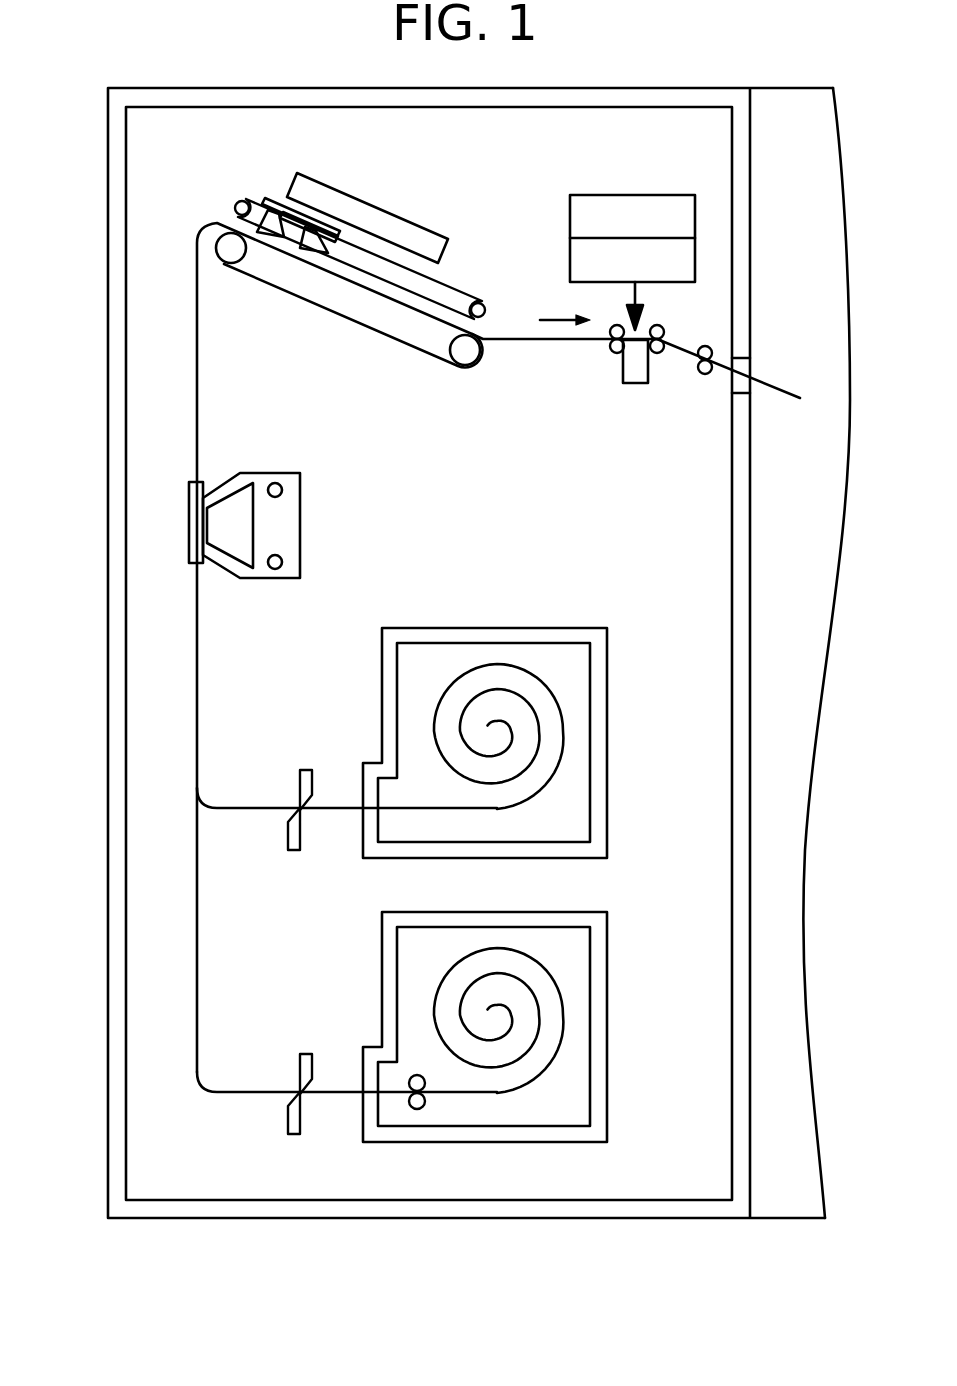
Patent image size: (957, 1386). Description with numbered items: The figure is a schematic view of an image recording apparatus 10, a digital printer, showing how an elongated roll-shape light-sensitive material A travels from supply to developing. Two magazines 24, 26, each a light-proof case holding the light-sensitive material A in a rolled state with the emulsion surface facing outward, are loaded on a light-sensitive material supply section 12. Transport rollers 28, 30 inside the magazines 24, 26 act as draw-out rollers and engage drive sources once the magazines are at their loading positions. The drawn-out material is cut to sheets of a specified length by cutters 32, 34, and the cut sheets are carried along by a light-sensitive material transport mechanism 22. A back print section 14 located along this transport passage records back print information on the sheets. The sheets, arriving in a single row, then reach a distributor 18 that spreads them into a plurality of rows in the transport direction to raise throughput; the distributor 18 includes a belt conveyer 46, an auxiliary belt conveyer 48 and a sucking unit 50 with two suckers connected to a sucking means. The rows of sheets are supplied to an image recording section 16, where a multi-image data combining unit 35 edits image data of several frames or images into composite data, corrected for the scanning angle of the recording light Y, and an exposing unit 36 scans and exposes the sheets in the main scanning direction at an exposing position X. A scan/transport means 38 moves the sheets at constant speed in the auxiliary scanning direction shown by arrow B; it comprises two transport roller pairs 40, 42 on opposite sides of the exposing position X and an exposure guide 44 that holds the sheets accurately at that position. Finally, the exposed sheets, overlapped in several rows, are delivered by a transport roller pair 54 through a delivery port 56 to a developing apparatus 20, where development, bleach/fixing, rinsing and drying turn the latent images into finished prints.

The image recording apparatus 10 is at (650, 1157).
The light-sensitive material supply section 12 is at (512, 829).
The back print section 14 is at (300, 518).
The image recording section 16 is at (607, 227).
The distributor 18 is at (400, 195).
The developing apparatus 20 is at (783, 1175).
The light-sensitive material transport mechanism 22 is at (286, 887).
The magazine 24 is at (513, 743).
The magazine 26 is at (512, 1027).
The transport roller 28 is at (417, 806).
The transport roller 30 is at (414, 1075).
The cutter 32 is at (306, 770).
The cutter 34 is at (306, 1054).
The multi-image data combining unit 35 is at (645, 213).
The exposing unit 36 is at (597, 255).
The scan/transport means 38 is at (612, 418).
The transport roller pair 40 is at (608, 345).
The transport roller pair 42 is at (657, 352).
The exposure guide 44 is at (633, 372).
The belt conveyer 46 is at (438, 358).
The auxiliary belt conveyer 48 is at (467, 300).
The sucking unit 50 is at (292, 303).
The transport roller pair 54 is at (703, 373).
The delivery port 56 is at (785, 352).
The light-sensitive material A is at (197, 438).
The arrow B (auxiliary scanning direction) B is at (550, 313).
The exposing position X is at (660, 290).
The recording light Y is at (633, 302).